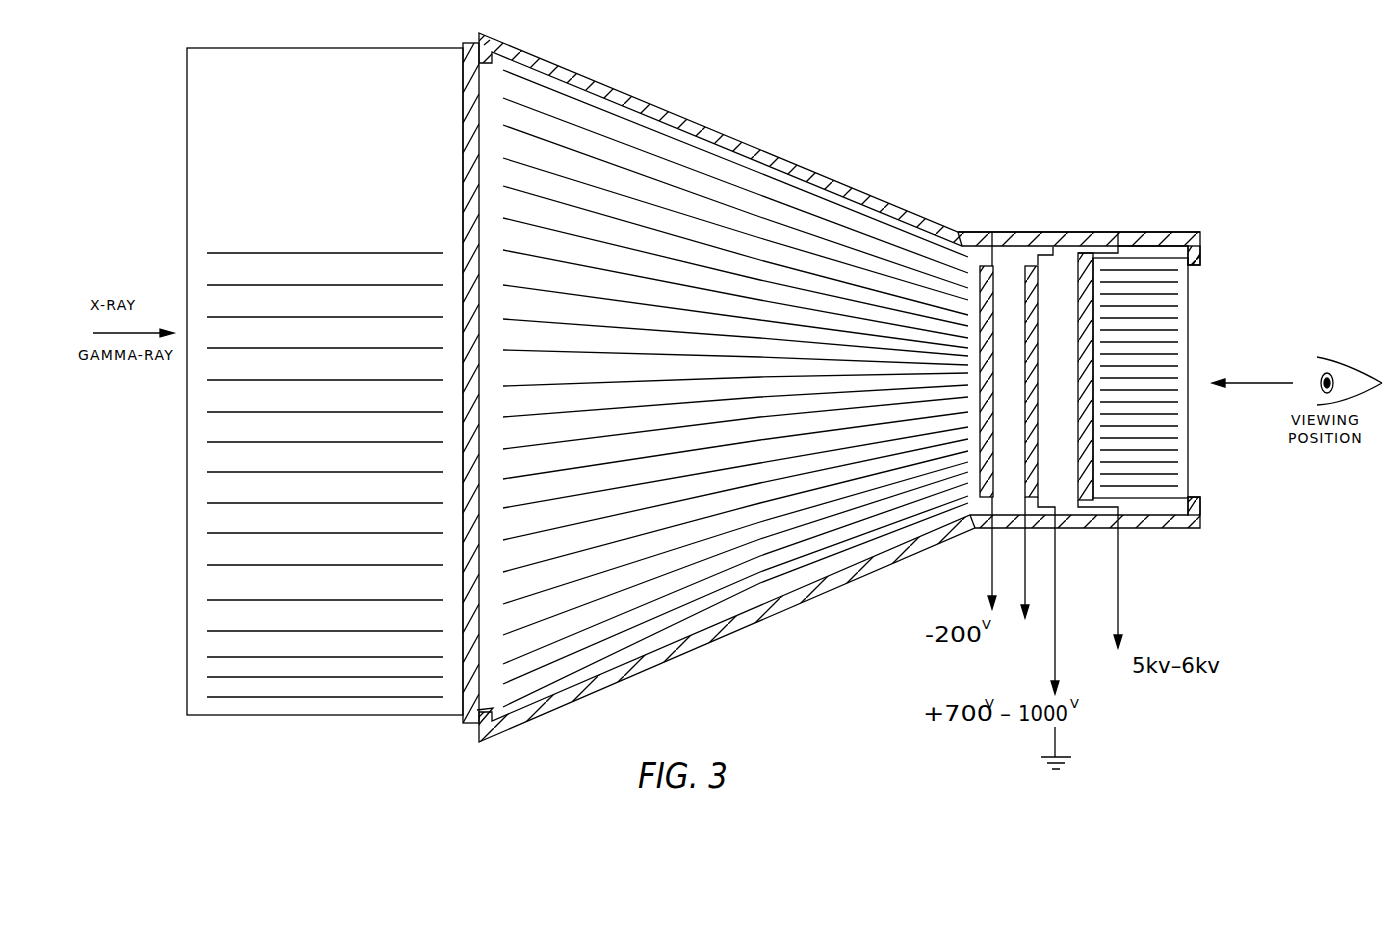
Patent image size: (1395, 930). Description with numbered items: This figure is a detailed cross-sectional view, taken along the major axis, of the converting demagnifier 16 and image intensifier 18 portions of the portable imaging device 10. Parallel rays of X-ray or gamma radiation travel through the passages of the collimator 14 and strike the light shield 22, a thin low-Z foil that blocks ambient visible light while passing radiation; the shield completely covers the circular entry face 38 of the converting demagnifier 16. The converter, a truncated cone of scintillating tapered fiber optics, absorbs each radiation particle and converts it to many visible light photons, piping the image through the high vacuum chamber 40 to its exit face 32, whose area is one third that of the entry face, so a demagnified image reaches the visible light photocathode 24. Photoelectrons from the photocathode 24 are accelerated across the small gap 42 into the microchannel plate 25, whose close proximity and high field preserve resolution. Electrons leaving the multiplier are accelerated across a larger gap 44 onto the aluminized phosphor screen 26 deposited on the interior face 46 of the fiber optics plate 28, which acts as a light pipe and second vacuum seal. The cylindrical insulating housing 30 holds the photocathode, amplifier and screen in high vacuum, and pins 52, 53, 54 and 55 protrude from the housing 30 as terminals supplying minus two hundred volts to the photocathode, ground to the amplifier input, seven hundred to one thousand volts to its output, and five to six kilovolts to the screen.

The imaging device 10 is at (785, 142).
The collimator 14 is at (232, 718).
The converting demagnifier 16 is at (762, 600).
The image intensifier 18 is at (1046, 222).
The light shield 22 is at (478, 678).
The visible light photocathode 24 is at (992, 264).
The microchannel plate 25 is at (1042, 278).
The aluminized phosphor screen 26 is at (1086, 290).
The fiber optics plate 28 is at (1162, 320).
The housing 30 is at (1140, 232).
The exit face 32 is at (972, 240).
The entry face 38 is at (478, 678).
The high vacuum chamber 40 is at (980, 506).
The gap 42 is at (1027, 264).
The gap 44 is at (1060, 490).
The interior face 46 is at (1095, 434).
The pin 52 is at (990, 562).
The pin 53 is at (1020, 586).
The pin 54 is at (1057, 560).
The pin 55 is at (1120, 588).